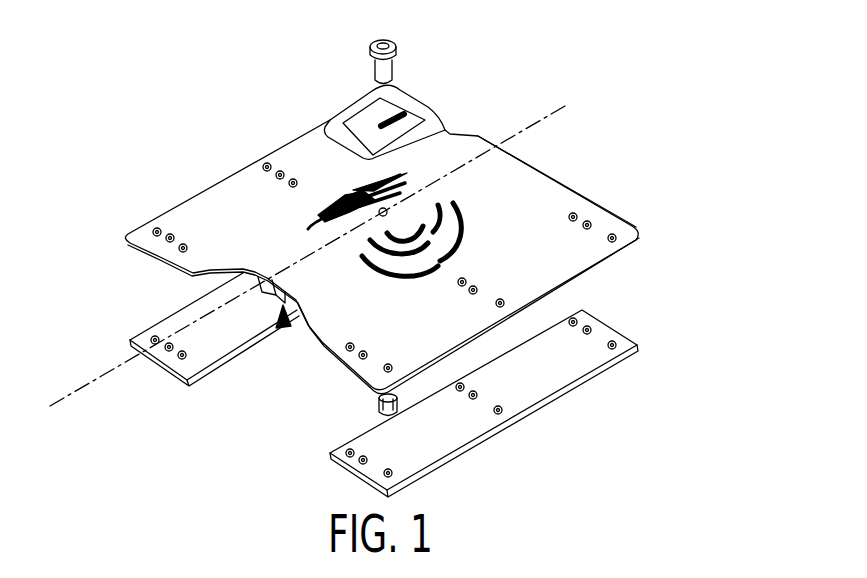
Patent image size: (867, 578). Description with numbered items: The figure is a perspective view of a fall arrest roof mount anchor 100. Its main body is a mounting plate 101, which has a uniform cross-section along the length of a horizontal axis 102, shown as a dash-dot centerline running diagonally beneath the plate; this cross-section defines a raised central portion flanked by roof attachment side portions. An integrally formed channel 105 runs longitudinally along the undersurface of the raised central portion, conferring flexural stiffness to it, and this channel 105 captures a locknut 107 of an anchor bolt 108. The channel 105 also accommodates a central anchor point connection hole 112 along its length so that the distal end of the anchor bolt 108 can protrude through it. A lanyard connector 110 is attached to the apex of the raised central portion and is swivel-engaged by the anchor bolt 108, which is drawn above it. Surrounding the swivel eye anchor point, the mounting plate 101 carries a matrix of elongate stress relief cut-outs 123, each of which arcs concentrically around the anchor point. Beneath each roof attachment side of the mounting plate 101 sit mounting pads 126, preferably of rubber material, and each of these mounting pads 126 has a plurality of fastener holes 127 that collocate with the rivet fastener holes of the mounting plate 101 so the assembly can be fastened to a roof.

The fall arrest roof mount anchor 100 is at (593, 82).
The mounting plate 101 is at (541, 173).
The horizontal axis 102 is at (90, 388).
The channel 105 is at (283, 330).
The locknut 107 is at (370, 405).
The anchor bolt 108 is at (397, 50).
The lanyard connector 110 is at (420, 112).
The central anchor point connection hole 112 is at (383, 208).
The elongate stress relief cut-outs 123 is at (464, 230).
The mounting pads 126 is at (612, 328).
The fastener holes 127 is at (615, 352).